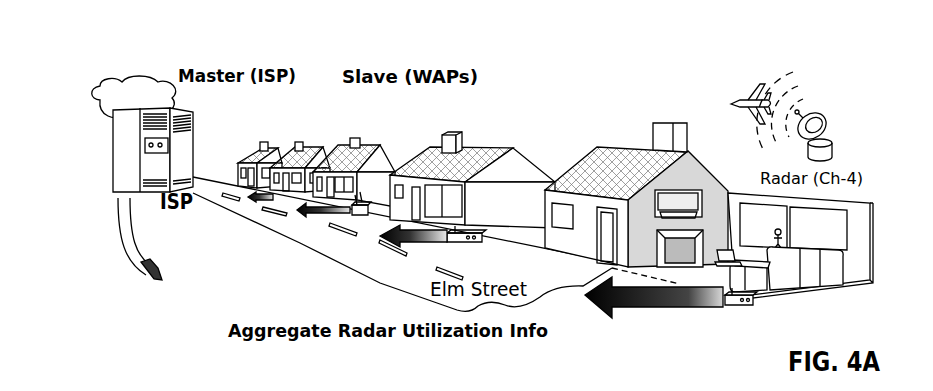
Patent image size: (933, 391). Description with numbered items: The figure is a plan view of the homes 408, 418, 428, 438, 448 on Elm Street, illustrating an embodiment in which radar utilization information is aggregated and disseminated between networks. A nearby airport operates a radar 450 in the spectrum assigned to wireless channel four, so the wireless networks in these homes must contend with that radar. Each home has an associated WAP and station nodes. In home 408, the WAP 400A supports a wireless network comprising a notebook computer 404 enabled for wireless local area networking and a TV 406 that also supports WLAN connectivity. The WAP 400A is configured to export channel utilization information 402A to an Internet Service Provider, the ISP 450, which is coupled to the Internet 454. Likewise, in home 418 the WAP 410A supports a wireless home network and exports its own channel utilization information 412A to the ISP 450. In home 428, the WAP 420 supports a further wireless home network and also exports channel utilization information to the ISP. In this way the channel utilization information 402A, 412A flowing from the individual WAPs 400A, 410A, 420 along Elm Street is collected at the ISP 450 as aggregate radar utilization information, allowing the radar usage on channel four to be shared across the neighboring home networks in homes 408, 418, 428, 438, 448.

The Internet 454 is at (123, 84).
The radar 450 is at (117, 161).
The home 448 is at (266, 144).
The home 438 is at (303, 147).
The home 428 is at (362, 149).
The home 418 is at (458, 150).
The home 408 is at (688, 150).
The WAP 420 is at (370, 194).
The WAP 410A is at (479, 233).
The channel utilization information 412A is at (430, 246).
The TV 406 is at (676, 194).
The notebook computer 404 is at (742, 250).
The channel utilization information 402A is at (614, 316).
The WAP 400A is at (753, 305).